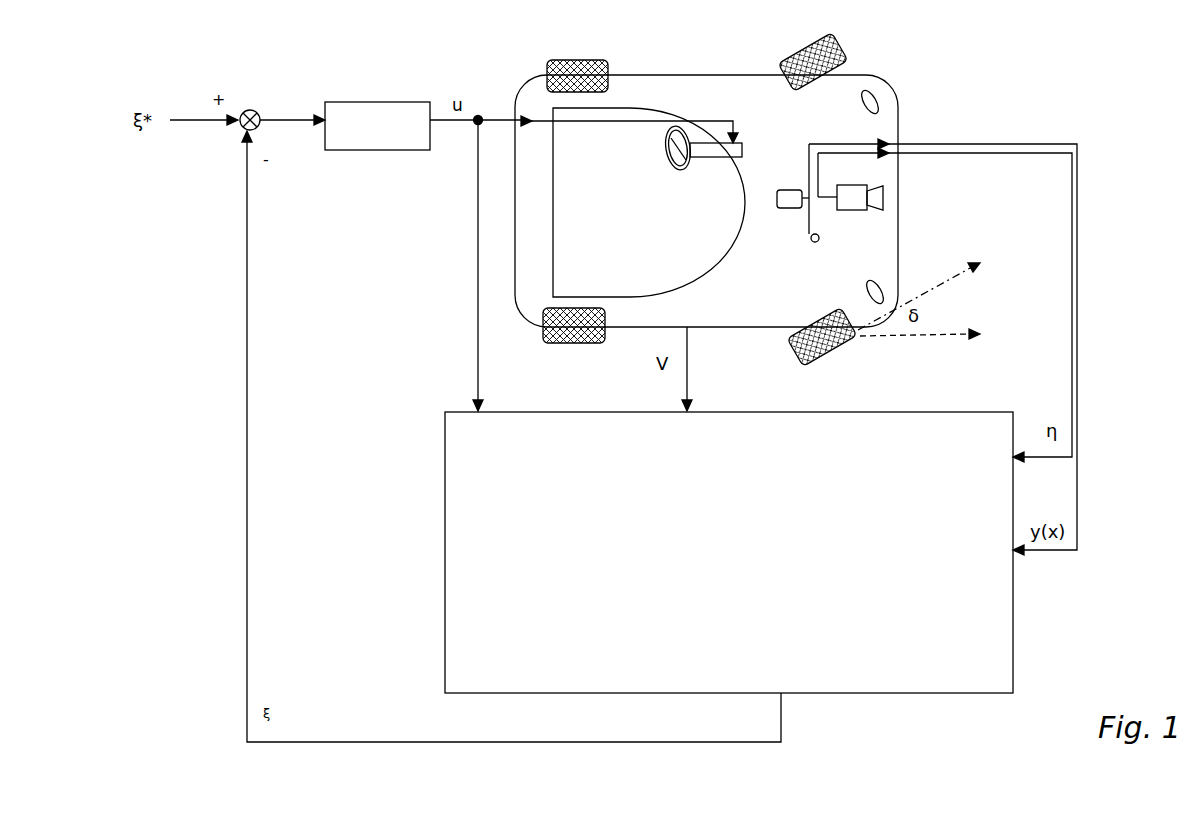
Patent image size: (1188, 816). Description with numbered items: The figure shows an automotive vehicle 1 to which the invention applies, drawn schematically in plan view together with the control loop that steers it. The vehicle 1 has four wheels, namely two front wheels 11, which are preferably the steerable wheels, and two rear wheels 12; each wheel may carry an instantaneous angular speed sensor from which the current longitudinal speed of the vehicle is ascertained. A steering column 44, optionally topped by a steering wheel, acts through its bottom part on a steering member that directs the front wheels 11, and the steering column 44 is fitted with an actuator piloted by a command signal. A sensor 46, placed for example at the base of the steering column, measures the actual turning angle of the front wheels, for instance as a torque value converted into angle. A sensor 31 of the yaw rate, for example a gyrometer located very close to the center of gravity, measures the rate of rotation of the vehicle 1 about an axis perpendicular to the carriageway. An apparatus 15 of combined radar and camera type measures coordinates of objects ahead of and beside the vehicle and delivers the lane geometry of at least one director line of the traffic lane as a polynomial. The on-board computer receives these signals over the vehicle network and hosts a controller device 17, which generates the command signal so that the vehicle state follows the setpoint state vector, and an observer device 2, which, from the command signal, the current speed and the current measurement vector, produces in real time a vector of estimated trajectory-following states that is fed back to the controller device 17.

The automotive vehicle 1 is at (885, 85).
The observer device 2 is at (1013, 412).
The front wheels 11 is at (845, 45).
The rear wheels 12 is at (606, 62).
The apparatus of combined radar and camera type 15 is at (849, 212).
The controller device 17 is at (395, 101).
The sensor of the yaw rate 31 is at (783, 190).
The steering column 44 is at (700, 168).
The sensor 46 is at (812, 242).